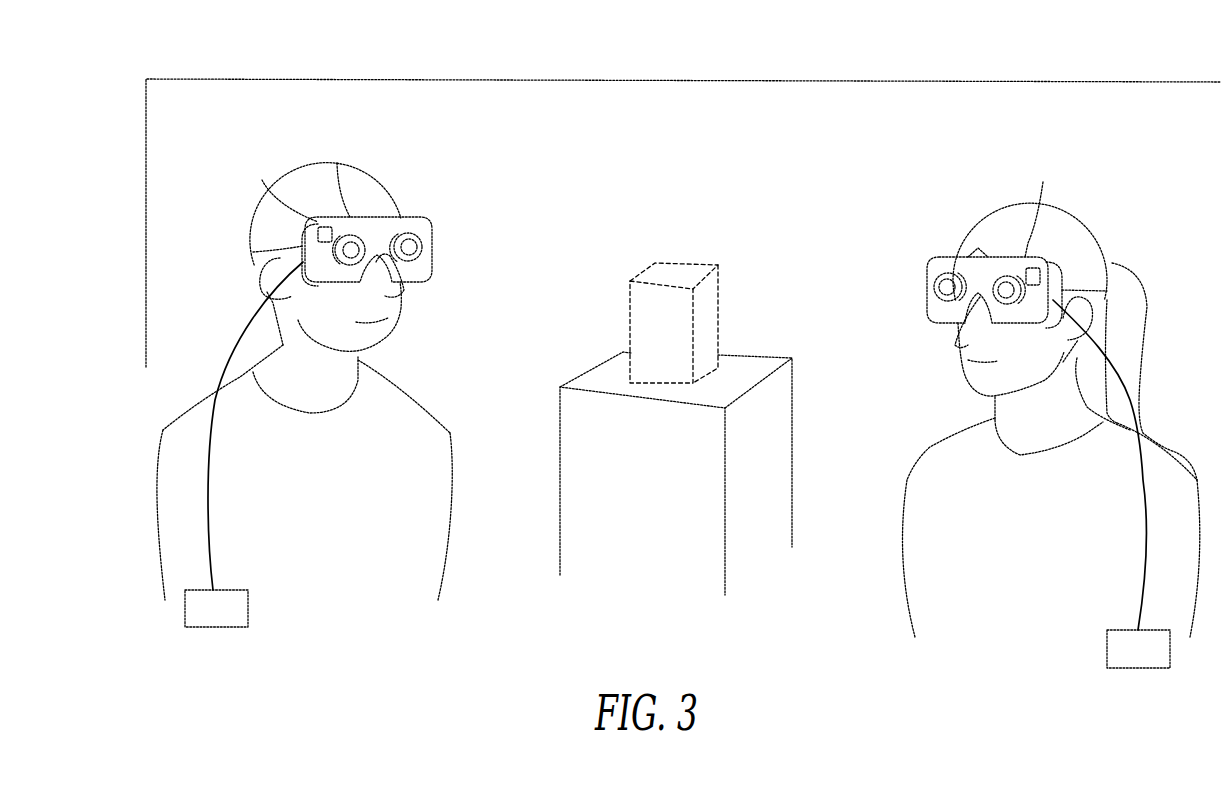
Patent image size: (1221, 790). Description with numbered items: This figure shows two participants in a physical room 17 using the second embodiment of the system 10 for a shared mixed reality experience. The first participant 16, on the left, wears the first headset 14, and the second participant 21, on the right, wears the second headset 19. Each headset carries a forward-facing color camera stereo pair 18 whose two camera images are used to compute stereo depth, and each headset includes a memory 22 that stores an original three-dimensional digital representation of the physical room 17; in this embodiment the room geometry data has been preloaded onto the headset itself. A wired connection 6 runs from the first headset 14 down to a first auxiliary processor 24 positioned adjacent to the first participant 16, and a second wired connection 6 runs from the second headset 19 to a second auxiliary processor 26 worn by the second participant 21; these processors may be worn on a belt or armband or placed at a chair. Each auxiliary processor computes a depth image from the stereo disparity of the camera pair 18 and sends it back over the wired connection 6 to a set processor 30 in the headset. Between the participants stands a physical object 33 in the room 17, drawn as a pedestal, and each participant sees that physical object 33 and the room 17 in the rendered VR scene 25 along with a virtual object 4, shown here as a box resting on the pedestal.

The system 10 is at (256, 104).
The first headset 14 is at (422, 206).
The first participant 16 is at (306, 511).
The physical room 17 is at (638, 159).
The forward-facing color camera stereo pair 18 is at (374, 277).
The second headset 19 is at (337, 163).
The second participant 21 is at (1018, 559).
The memory 22 is at (649, 202).
The first auxiliary processor 24 is at (204, 622).
The rendered 3D VR scene 25 is at (628, 294).
The second auxiliary processor 26 is at (1126, 663).
The set processor 30 is at (317, 235).
The physical object 33 is at (630, 503).
The virtual object 4 is at (657, 331).
The wired connection 6 is at (213, 462).